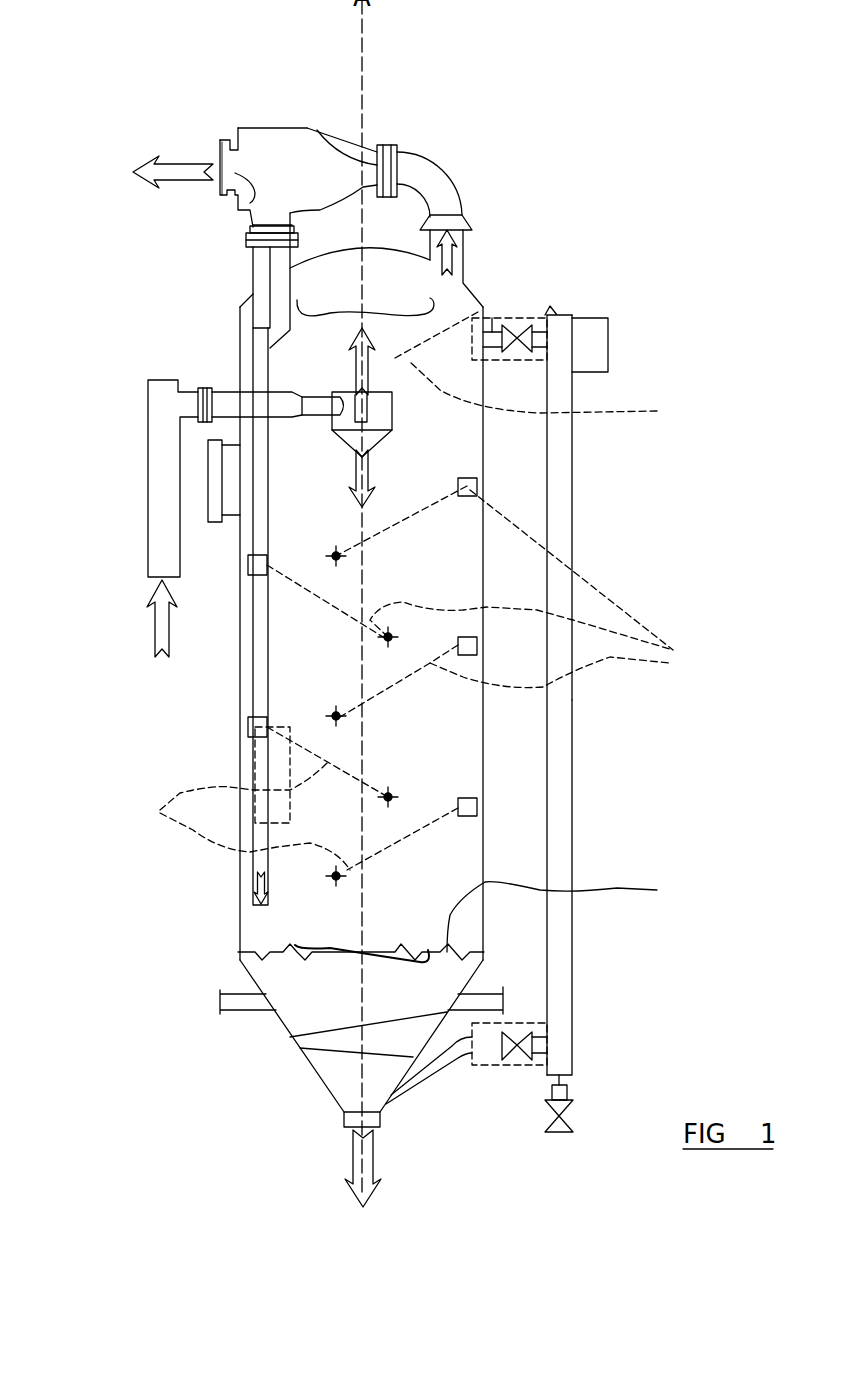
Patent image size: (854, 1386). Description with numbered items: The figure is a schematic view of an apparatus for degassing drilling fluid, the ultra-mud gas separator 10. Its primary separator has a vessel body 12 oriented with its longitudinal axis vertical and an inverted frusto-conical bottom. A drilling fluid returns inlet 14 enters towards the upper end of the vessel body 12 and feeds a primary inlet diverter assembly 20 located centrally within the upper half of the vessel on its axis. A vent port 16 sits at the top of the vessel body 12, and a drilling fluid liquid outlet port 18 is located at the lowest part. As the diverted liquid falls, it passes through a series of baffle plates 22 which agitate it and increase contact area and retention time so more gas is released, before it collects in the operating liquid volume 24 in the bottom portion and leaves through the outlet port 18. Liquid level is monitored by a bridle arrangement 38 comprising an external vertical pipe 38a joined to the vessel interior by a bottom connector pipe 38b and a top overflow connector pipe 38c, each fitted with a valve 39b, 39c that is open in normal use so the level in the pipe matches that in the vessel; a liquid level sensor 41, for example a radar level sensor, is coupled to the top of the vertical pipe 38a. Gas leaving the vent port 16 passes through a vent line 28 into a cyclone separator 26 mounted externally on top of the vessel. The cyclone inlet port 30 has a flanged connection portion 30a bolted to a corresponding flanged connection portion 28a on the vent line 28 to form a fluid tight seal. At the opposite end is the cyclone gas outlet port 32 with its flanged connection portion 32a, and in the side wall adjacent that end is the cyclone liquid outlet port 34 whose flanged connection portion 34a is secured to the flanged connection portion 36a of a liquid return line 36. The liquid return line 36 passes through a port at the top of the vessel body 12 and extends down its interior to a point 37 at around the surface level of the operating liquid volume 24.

The ultra-mud gas separator 10 is at (592, 182).
The vessel body 12 is at (238, 763).
The drilling fluid returns inlet 14 is at (163, 557).
The vent port 16 is at (465, 273).
The drilling fluid liquid outlet port 18 is at (358, 1112).
The primary inlet diverter assembly 20 is at (392, 432).
The baffle plates 22 is at (415, 599).
The operating liquid volume 24 is at (317, 1000).
The cyclone separator 26 is at (282, 118).
The vent line 28 is at (440, 183).
The flanged connection portion 28a is at (397, 157).
The cyclone inlet port 30 is at (367, 153).
The flanged connection portion 30a is at (372, 140).
The cyclone gas outlet port 32 is at (250, 213).
The flanged connection portion 32a is at (235, 140).
The cyclone liquid outlet port 34 is at (247, 212).
The flanged connection portion 34a is at (252, 222).
The liquid return line 36 is at (253, 287).
The flanged connection portion 36a is at (253, 260).
The point 37 is at (263, 910).
The bridle arrangement 38 is at (583, 533).
The vertical pipe 38a is at (573, 763).
The bottom connector pipe 38b is at (418, 1083).
The top overflow connector pipe 38c is at (492, 318).
The valve 39b is at (518, 1063).
The valve 39c is at (520, 323).
The liquid level sensor 41 is at (608, 347).